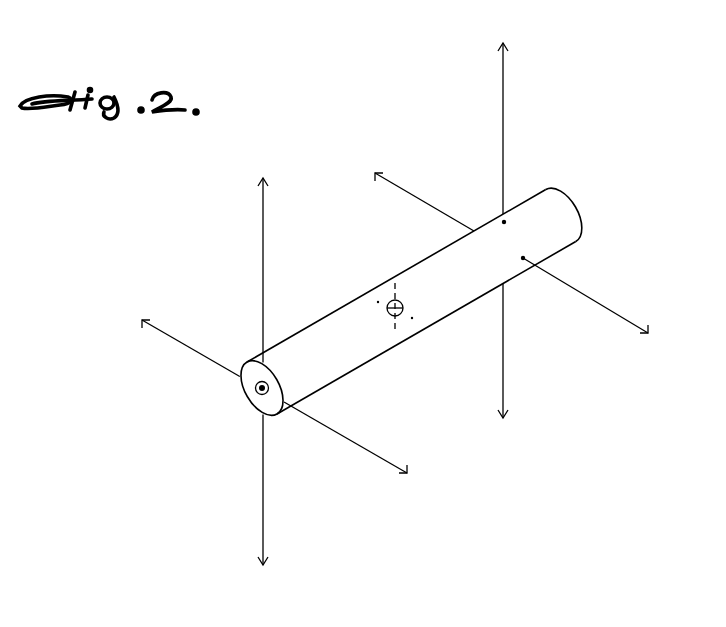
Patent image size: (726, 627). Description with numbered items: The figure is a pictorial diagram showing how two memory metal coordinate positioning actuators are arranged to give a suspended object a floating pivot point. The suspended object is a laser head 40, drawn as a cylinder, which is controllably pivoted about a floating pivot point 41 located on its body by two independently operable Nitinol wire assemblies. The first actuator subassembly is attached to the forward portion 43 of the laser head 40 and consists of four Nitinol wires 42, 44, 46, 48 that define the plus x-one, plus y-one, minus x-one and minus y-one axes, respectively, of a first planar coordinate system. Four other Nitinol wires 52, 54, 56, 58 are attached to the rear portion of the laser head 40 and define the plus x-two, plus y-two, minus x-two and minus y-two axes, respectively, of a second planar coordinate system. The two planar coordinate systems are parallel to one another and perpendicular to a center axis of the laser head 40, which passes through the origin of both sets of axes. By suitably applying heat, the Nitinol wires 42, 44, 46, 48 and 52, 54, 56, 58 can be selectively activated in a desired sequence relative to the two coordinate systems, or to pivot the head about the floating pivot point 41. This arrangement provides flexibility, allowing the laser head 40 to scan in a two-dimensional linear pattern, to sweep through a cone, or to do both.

The laser head 40 is at (562, 216).
The floating pivot point 41 is at (403, 306).
The Nitinol wire 42 is at (353, 441).
The forward portion 43 is at (248, 384).
The Nitinol wire 44 is at (263, 290).
The Nitinol wire 46 is at (190, 344).
The Nitinol wire 48 is at (263, 516).
The Nitinol wire 52 is at (597, 304).
The Nitinol wire 54 is at (503, 130).
The Nitinol wire 56 is at (428, 201).
The Nitinol wire 58 is at (503, 369).